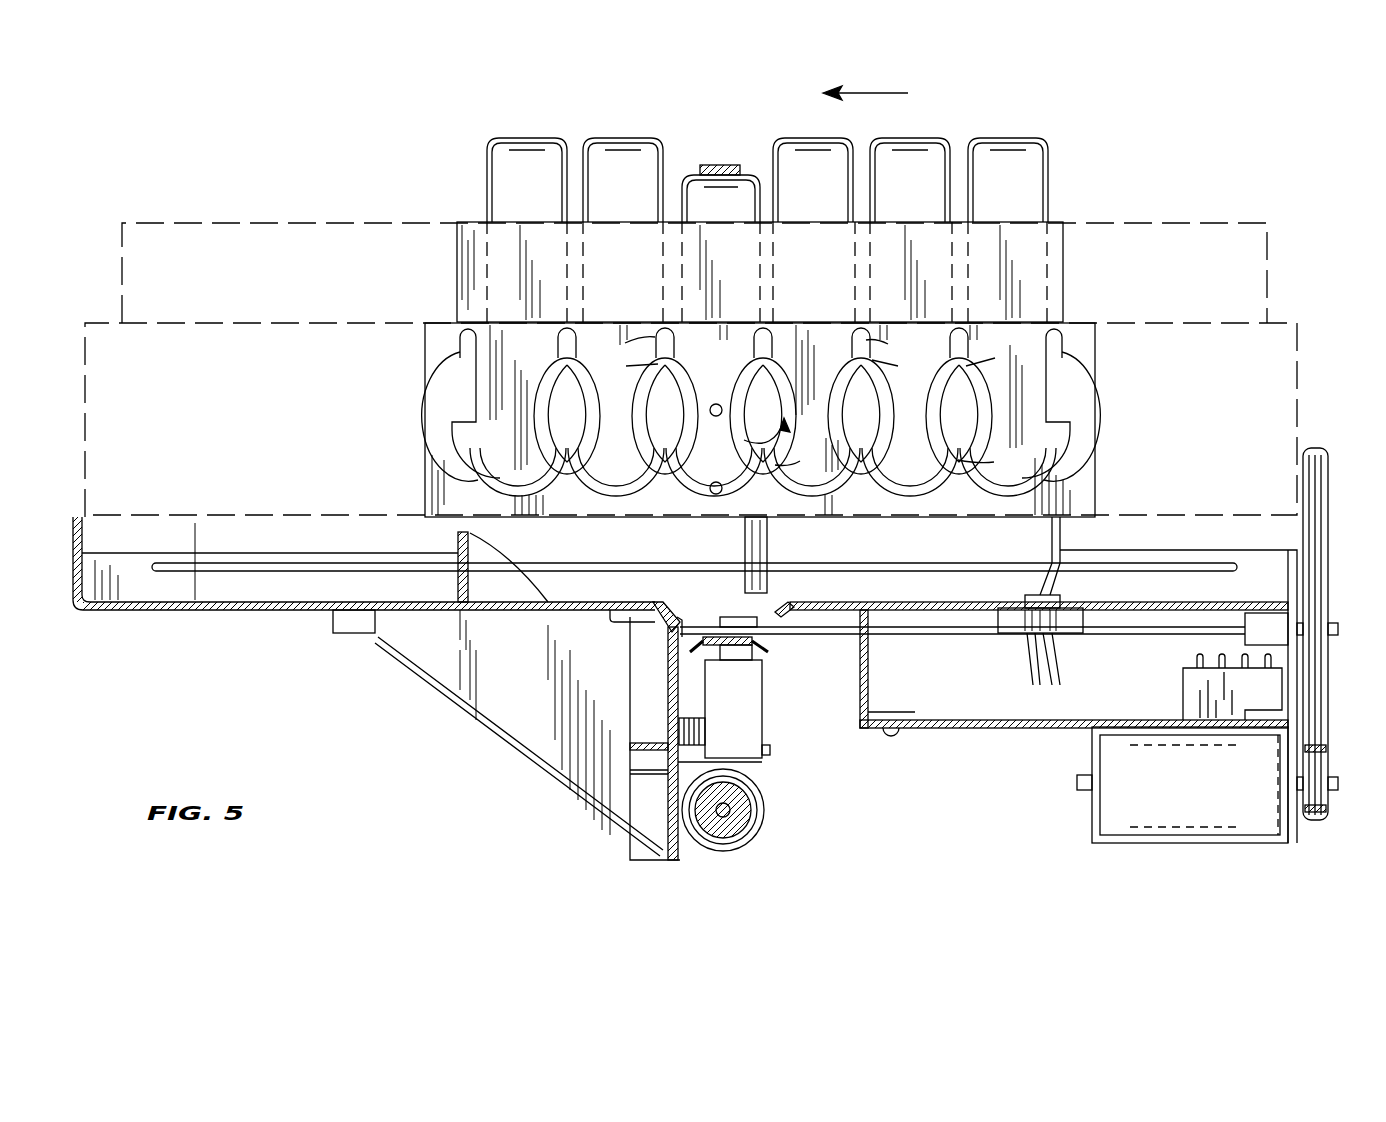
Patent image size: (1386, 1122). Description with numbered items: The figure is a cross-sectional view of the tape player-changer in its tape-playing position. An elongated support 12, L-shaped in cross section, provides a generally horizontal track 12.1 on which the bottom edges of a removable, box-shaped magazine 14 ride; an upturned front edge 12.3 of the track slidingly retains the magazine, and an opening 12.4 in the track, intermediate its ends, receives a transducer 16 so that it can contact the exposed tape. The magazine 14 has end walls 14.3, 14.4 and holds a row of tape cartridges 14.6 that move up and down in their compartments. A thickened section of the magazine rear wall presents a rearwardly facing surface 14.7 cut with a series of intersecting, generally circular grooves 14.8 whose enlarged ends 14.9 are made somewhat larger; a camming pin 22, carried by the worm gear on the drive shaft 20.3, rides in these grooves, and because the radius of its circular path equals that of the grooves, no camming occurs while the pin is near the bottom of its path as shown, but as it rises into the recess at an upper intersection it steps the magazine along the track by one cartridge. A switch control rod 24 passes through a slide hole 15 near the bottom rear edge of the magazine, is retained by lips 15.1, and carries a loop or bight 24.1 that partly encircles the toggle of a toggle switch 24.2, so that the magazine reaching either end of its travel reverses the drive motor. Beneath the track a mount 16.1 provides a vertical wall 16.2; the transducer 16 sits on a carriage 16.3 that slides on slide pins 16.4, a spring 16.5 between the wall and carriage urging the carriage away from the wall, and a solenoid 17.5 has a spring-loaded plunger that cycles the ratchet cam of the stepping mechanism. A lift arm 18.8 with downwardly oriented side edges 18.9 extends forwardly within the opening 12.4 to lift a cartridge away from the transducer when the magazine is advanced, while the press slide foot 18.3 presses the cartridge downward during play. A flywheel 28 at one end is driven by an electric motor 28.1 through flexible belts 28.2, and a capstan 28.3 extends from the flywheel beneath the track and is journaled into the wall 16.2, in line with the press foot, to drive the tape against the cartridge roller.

The support 12 is at (266, 615).
The track 12.1 is at (245, 602).
The upturned front edge 12.3 is at (270, 553).
The opening 12.4 is at (683, 600).
The magazine 14 is at (472, 212).
The end wall 14.3 is at (457, 270).
The end wall 14.4 is at (1063, 286).
The tape cartridge 14.6 is at (1027, 161).
The rearwardly facing surface 14.7 is at (437, 488).
The circular grooves 14.8 is at (605, 478).
The groove ends 14.9 is at (455, 396).
The slide hole 15 is at (458, 568).
The lip 15.1 is at (752, 561).
The transducer 16 is at (705, 660).
The mount 16.1 is at (506, 735).
The vertical wall 16.2 is at (668, 808).
The carriage 16.3 is at (720, 711).
The slide pins 16.4 is at (770, 753).
The spring 16.5 is at (740, 736).
The solenoid 17.5 is at (742, 817).
The press slide foot 18.3 is at (727, 166).
The lift arm 18.8 is at (712, 637).
The side edges 18.9 is at (984, 633).
The drive shaft 20.3 is at (716, 403).
The camming pin 22 is at (710, 489).
The switch control rod 24 is at (183, 564).
The loop or bight 24.1 is at (1048, 562).
The toggle switch 24.2 is at (1066, 625).
The flywheel 28 is at (1328, 502).
The electric motor 28.1 is at (1182, 785).
The flexible belts 28.2 is at (1318, 723).
The capstan 28.3 is at (905, 645).